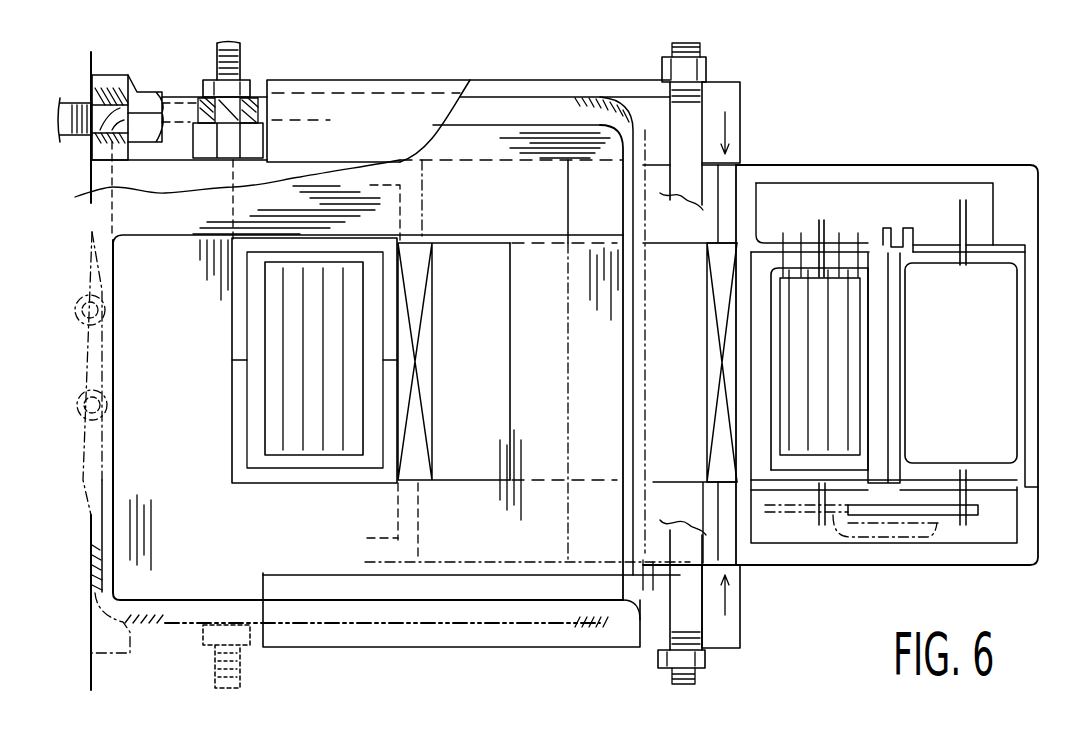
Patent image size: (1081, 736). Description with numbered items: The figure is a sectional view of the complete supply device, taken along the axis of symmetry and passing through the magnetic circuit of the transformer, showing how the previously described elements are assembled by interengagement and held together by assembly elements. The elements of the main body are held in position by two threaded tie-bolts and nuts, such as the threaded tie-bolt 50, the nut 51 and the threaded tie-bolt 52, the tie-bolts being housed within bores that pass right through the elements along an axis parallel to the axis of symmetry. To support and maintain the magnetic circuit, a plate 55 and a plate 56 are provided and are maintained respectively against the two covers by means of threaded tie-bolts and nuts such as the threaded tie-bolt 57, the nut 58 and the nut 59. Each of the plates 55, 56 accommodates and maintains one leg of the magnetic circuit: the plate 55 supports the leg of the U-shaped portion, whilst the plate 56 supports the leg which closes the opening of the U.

The threaded tie-bolt 50 is at (280, 38).
The nut 51 is at (203, 90).
The threaded tie-bolt 52 is at (203, 638).
The plate 55 is at (742, 92).
The plate 56 is at (742, 625).
The threaded tie-bolt 57 is at (700, 45).
The nut 58 is at (662, 72).
The nut 59 is at (706, 660).